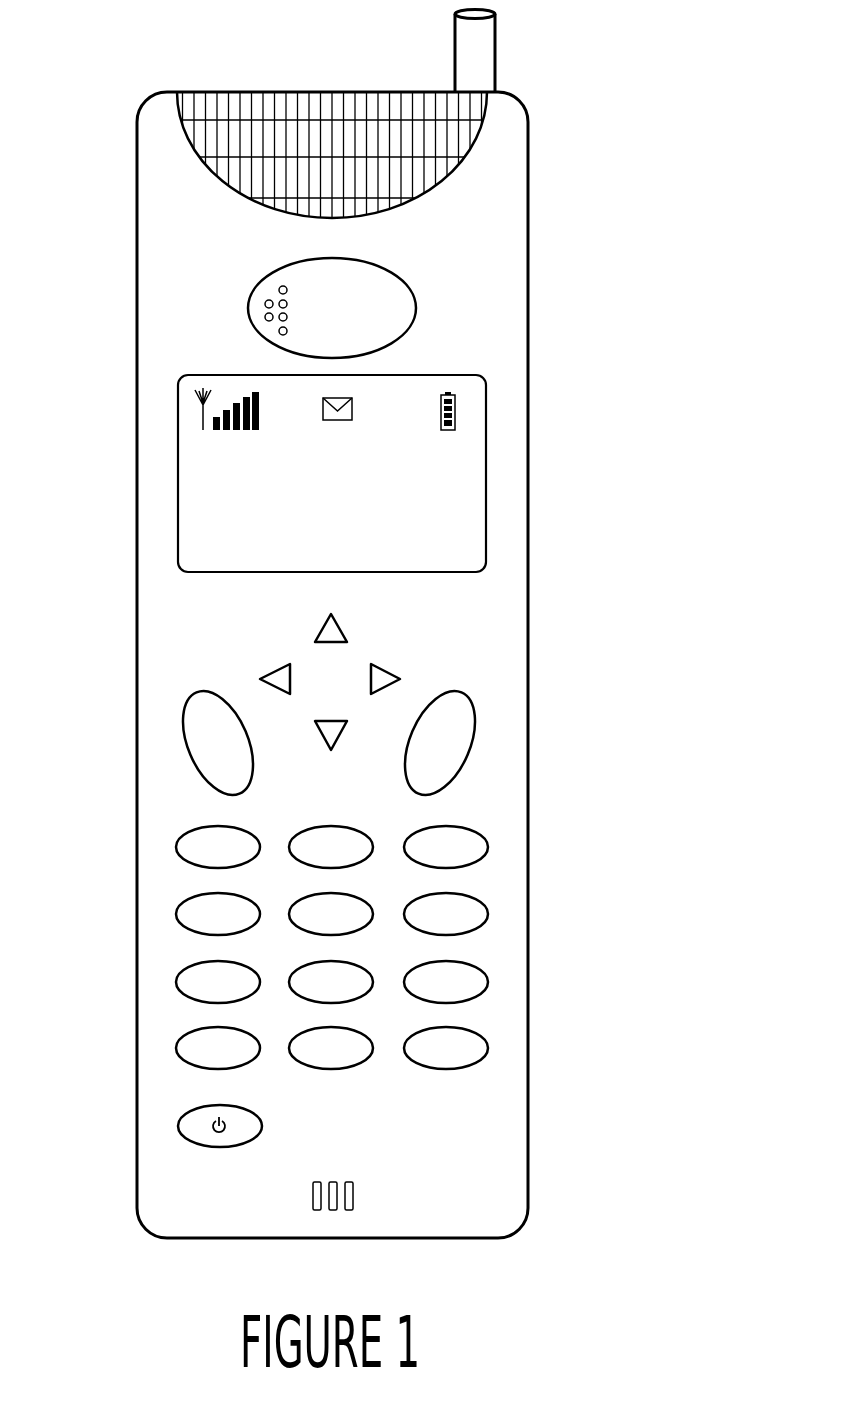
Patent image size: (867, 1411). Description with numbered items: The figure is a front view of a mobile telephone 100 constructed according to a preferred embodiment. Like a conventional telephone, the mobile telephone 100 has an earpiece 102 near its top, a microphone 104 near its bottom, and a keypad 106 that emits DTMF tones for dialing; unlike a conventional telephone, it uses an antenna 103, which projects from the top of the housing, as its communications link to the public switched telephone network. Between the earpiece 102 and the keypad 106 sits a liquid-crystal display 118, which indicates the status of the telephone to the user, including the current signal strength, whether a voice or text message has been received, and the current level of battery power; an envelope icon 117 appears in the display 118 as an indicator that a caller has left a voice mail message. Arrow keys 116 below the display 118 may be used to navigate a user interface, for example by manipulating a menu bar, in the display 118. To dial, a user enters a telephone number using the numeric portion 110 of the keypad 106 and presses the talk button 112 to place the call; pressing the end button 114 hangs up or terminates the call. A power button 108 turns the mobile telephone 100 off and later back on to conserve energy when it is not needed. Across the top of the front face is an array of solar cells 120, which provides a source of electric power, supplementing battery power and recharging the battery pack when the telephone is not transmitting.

The mobile telephone 100 is at (658, 78).
The earpiece 102 is at (377, 283).
The antenna 103 is at (482, 45).
The microphone 104 is at (348, 1177).
The keypad 106 is at (541, 1152).
The power button 108 is at (248, 1128).
The numeric portion 110 is at (150, 1080).
The talk button 112 is at (463, 713).
The end button 114 is at (200, 715).
The arrow keys 116 is at (330, 602).
The envelope icon 117 is at (347, 398).
The liquid-crystal display 118 is at (473, 413).
The array of solar cells 120 is at (273, 91).